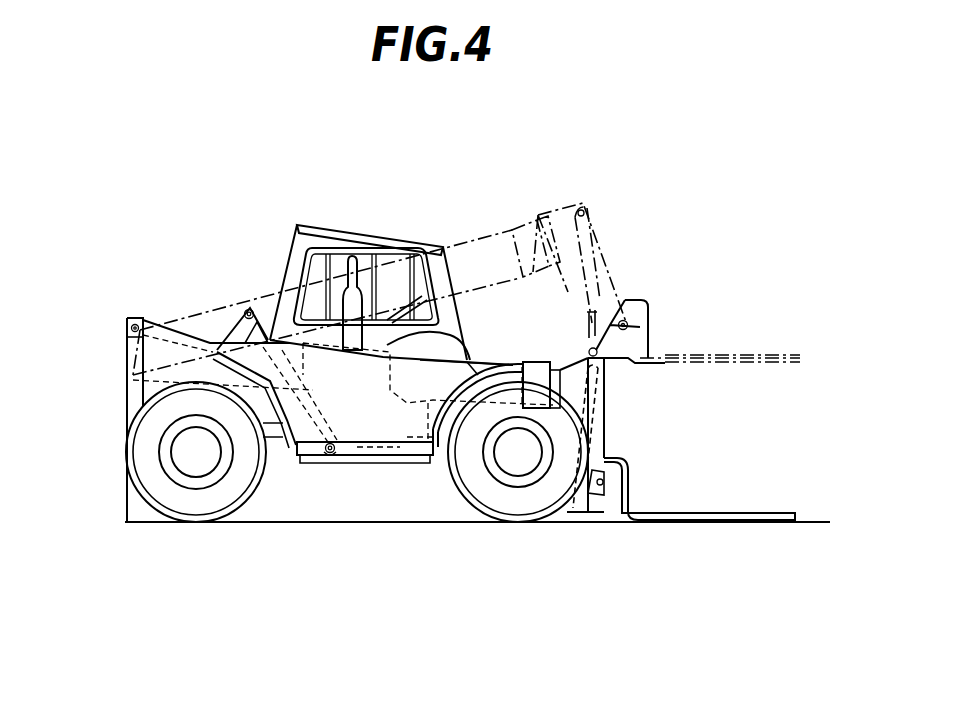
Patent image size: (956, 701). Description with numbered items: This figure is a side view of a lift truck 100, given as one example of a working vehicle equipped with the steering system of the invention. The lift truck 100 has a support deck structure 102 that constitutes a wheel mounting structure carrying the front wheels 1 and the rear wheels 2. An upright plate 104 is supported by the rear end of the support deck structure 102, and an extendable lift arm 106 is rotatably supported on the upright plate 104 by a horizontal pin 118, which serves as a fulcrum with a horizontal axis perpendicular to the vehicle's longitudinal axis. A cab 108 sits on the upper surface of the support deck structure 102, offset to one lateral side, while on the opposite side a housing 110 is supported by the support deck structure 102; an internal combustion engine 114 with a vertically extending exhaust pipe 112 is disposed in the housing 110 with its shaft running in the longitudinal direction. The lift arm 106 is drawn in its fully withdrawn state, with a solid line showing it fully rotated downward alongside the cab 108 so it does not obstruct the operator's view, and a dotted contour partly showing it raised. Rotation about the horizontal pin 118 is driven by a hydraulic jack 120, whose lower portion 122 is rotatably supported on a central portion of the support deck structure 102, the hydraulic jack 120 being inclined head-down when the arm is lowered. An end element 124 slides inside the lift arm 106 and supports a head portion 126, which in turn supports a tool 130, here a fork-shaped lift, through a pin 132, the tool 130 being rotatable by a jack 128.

The front wheel 1 is at (518, 505).
The rear wheel 2 is at (226, 505).
The lift truck 100 is at (305, 200).
The support deck structure 102 is at (415, 463).
The upright plate 104 is at (127, 340).
The extendable lift arm 106 is at (203, 340).
The cab 108 is at (398, 225).
The housing 110 is at (457, 357).
The exhaust pipe 112 is at (283, 290).
The internal combustion engine 114 is at (373, 430).
The horizontal pin 118 is at (135, 318).
The hydraulic jack 120 is at (313, 390).
The lower portion of the hydraulic jack 122 is at (330, 458).
The end element 124 is at (537, 222).
The head portion 126 is at (612, 262).
The jack 128 is at (583, 306).
The tool 130 is at (718, 355).
The pin 132 is at (648, 324).